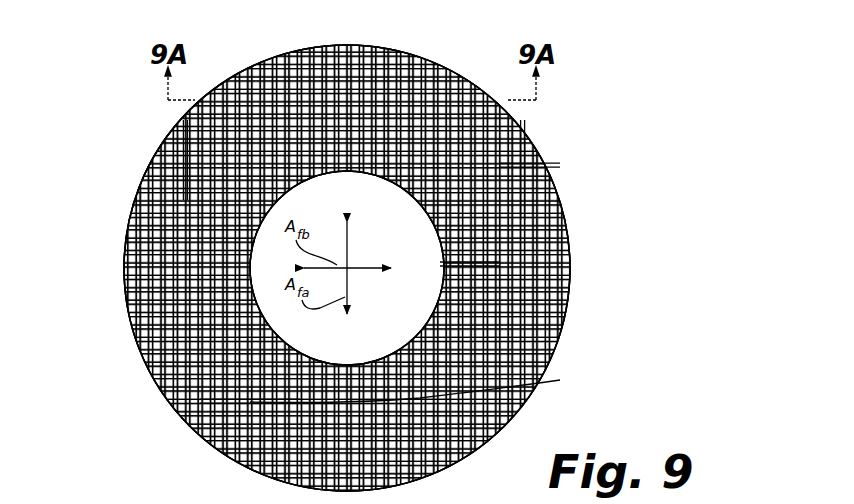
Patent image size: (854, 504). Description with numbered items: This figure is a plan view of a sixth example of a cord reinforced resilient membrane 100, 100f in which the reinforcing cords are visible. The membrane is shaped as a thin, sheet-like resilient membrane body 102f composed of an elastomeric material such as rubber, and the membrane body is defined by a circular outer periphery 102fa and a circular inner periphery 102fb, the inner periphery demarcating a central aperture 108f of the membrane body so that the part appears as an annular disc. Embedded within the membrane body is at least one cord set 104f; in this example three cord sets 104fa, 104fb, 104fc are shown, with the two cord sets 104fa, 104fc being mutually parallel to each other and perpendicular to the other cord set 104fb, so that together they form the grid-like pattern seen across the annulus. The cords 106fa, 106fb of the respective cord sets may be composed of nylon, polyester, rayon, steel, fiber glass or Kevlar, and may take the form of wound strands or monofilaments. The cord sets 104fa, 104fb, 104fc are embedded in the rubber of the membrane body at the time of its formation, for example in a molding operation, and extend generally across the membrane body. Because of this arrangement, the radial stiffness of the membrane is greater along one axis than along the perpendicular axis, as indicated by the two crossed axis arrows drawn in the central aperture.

The cord reinforced resilient membrane 100 is at (600, 110).
The cord reinforced resilient membrane 100f is at (347, 268).
The membrane body 102f is at (168, 118).
The circular outer periphery 102fa is at (546, 175).
The circular inner periphery 102fb is at (425, 262).
The cord set 104f is at (572, 250).
The first cord set 104fa is at (250, 402).
The second cord set 104fb is at (522, 166).
The third cord set 104fc is at (250, 401).
The cords 106fa is at (420, 398).
The cords 106fb is at (172, 203).
The central aperture 108f is at (273, 305).